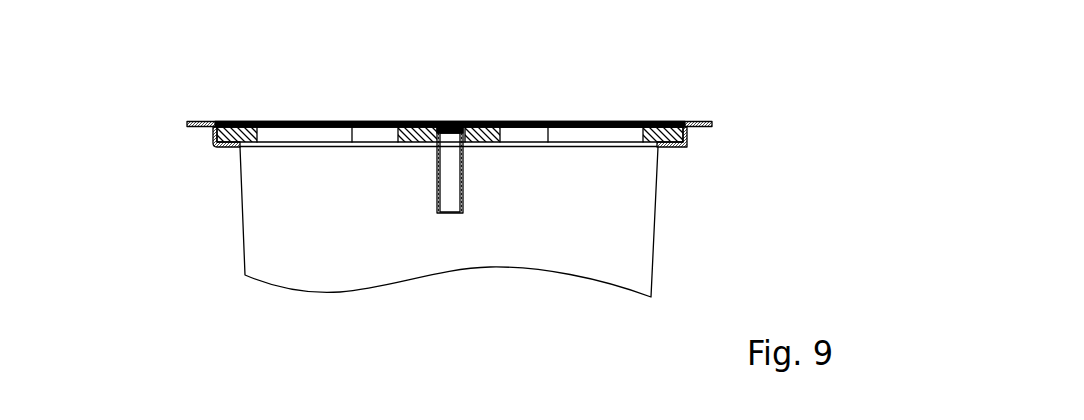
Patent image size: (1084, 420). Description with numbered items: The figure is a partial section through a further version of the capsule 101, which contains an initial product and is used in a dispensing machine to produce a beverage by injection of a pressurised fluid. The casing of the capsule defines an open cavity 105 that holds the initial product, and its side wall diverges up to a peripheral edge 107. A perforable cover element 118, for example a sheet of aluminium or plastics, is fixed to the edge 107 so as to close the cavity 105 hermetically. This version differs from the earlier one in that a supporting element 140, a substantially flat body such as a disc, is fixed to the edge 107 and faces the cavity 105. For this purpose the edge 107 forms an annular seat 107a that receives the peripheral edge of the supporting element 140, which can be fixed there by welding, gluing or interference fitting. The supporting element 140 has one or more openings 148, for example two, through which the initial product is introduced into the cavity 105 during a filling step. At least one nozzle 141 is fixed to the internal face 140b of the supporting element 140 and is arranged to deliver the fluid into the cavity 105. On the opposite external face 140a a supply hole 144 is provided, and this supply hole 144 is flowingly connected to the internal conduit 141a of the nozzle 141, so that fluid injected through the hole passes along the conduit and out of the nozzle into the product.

The capsule 101 is at (142, 117).
The open cavity 105 is at (582, 232).
The peripheral edge 107 is at (206, 122).
The annular seat 107a is at (240, 128).
The cover element 118 is at (528, 122).
The supporting element 140 is at (408, 128).
The external face 140a is at (655, 122).
The internal face 140b is at (305, 143).
The nozzle 141 is at (463, 213).
The internal conduit 141a is at (460, 175).
The supply hole 144 is at (442, 130).
The openings 148 is at (275, 135).